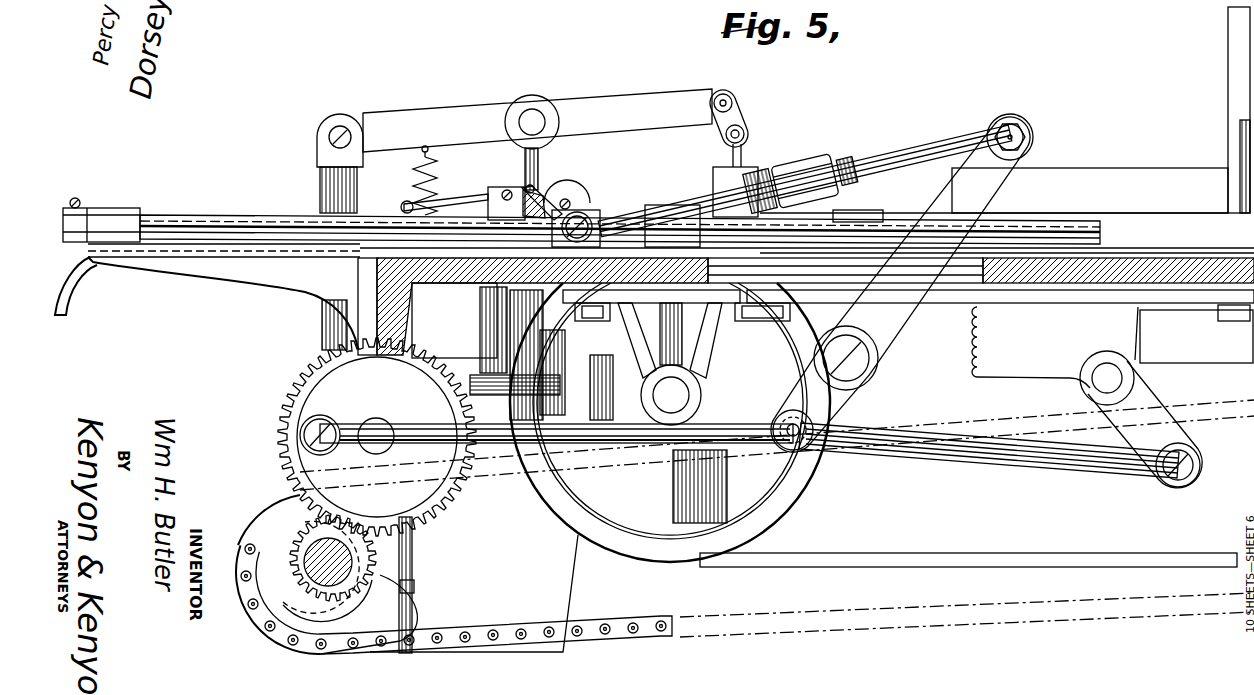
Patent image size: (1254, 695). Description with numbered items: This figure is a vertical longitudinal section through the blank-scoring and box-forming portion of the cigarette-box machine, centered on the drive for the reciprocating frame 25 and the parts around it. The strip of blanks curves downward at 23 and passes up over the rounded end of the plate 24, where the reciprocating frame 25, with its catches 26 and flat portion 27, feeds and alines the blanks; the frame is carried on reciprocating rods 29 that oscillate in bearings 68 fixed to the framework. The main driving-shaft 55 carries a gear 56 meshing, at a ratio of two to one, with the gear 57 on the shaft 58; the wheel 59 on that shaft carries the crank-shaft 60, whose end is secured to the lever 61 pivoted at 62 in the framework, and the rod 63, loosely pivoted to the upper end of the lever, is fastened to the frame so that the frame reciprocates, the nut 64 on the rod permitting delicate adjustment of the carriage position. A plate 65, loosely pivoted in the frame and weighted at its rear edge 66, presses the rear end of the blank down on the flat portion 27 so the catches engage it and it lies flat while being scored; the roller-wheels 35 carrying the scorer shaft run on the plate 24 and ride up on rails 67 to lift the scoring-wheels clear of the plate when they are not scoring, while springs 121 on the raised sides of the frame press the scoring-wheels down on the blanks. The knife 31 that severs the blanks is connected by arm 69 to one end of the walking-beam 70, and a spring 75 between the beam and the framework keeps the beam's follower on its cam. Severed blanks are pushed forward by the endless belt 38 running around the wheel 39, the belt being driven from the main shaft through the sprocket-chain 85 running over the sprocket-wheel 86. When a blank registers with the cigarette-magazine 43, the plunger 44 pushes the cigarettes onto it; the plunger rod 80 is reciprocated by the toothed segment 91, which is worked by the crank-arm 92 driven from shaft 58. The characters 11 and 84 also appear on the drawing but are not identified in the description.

The frame 11 is at (223, 303).
The downward curve of strip 23 is at (540, 190).
The plate 24 is at (72, 285).
The reciprocating frame 25 is at (506, 189).
The catches 26 is at (402, 208).
The flat portion of frame 27 is at (446, 209).
The reciprocating rods 29 is at (217, 213).
The knife 31 is at (733, 152).
The roller-wheels 35 is at (577, 196).
The endless belt 38 is at (919, 557).
The wheel 39 is at (670, 422).
The cigarette-magazine 43 is at (1228, 90).
The plunger 44 is at (1090, 190).
The main driving-shaft 55 is at (352, 560).
The gear 56 is at (318, 528).
The gear 57 is at (285, 423).
The shaft 58 is at (385, 415).
The wheel 59 is at (377, 437).
The crank-shaft 60 is at (447, 430).
The lever 61 is at (900, 284).
The pivot 62 is at (868, 370).
The rod 63 is at (934, 150).
The nut 64 is at (800, 168).
The plate 65 is at (488, 196).
The weighted rear edge 66 is at (412, 163).
The rails 67 is at (265, 205).
The bearings 68 is at (122, 198).
The arm 69 is at (735, 105).
The walking-beam 70 is at (514, 151).
The spring 75 is at (437, 172).
The rod 80 is at (742, 150).
The pivot 84 is at (534, 112).
The sprocket-chain 85 is at (652, 628).
The sprocket-wheel 86 is at (327, 574).
The toothed segment 91 is at (1087, 397).
The crank-arm 92 is at (1073, 466).
The springs 121 is at (532, 189).